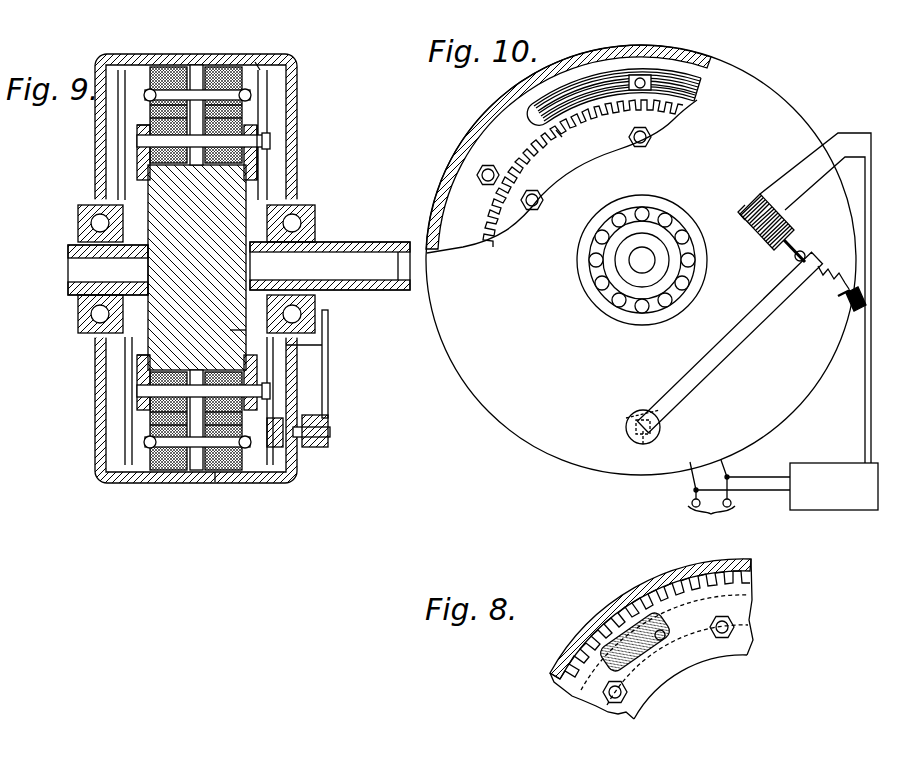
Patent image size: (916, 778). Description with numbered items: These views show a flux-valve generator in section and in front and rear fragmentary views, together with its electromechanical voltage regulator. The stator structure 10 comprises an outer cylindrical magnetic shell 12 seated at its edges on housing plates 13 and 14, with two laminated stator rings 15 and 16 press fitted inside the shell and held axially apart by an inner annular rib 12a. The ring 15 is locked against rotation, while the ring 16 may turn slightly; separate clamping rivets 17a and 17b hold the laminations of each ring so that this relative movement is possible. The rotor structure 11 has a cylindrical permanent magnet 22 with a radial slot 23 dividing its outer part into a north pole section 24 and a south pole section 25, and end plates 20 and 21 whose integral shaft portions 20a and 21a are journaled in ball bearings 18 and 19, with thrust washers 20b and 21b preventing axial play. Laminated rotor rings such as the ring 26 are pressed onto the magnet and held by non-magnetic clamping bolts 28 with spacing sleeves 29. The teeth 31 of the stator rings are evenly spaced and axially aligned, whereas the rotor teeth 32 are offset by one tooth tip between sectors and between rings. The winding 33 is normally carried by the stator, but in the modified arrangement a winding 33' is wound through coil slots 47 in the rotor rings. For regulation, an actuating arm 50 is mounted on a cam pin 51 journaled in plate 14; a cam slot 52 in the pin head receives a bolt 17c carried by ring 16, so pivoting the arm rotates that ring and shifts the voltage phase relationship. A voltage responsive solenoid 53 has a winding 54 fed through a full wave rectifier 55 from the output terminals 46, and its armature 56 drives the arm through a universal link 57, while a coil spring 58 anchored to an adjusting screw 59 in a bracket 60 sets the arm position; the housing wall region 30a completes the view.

In FIG. 9, the stator structure 10 is at (238, 484).
In FIG. 9, the rotor structure 11 is at (260, 150).
In FIG. 9, the outer cylindrical magnetic shell 12 is at (165, 66).
In FIG. 8, the outer cylindrical magnetic shell 12 is at (600, 613).
In FIG. 9, the inner annular rib 12a is at (215, 66).
In FIG. 9, the housing plate 13 is at (138, 127).
In FIG. 9, the housing plate 14 is at (290, 112).
In FIG. 9, the stator ring 15 is at (150, 68).
In FIG. 8, the stator ring 15 is at (752, 576).
In FIG. 9, the stator ring 16 is at (258, 64).
In FIG. 9, the clamping rivets 17a is at (145, 92).
In FIG. 9, the clamping rivets 17b is at (252, 72).
In FIG. 9, the bolt 17c is at (222, 472).
In FIG. 10, the bolt 17c is at (640, 447).
In FIG. 9, the ball bearing 18 is at (82, 208).
In FIG. 9, the ball bearing 19 is at (305, 196).
In FIG. 10, the ball bearing 19 is at (585, 263).
In FIG. 9, the end plate 20 is at (140, 160).
In FIG. 9, the shaft portion 20a is at (80, 297).
In FIG. 9, the thrust washer 20b is at (80, 236).
In FIG. 9, the end plate 21 is at (268, 170).
In FIG. 9, the shaft portion 21a is at (395, 290).
In FIG. 10, the shaft portion 21a is at (628, 268).
In FIG. 9, the thrust washer 21b is at (316, 207).
In FIG. 9, the permanent magnet 22 is at (235, 270).
In FIG. 9, the radially disposed slot 23 is at (165, 345).
In FIG. 9, the annular section 24 is at (138, 333).
In FIG. 9, the annular section 25 is at (286, 352).
In FIG. 9, the annular ring 26 is at (150, 400).
In FIG. 8, the annular ring 26 is at (742, 630).
In FIG. 9, the clamping bolts 28 is at (138, 141).
In FIG. 9, the spacing sleeves 29 is at (160, 490).
In FIG. 10, the housing wall 30a is at (545, 101).
In FIG. 9, the teeth 31 is at (246, 92).
In FIG. 10, the teeth 31 is at (530, 158).
In FIG. 8, the teeth 31 is at (684, 628).
In FIG. 9, the teeth 32 is at (246, 106).
In FIG. 10, the teeth 32 is at (560, 132).
In FIG. 8, the teeth 32 is at (687, 602).
In FIG. 10, the winding 33 is at (614, 72).
In FIG. 8, the winding 33' is at (634, 642).
In FIG. 10, the output terminals 46 is at (739, 495).
In FIG. 8, the coil slots 47 is at (663, 640).
In FIG. 9, the actuating arm 50 is at (330, 356).
In FIG. 10, the actuating arm 50 is at (733, 351).
In FIG. 9, the cam pin 51 is at (332, 432).
In FIG. 10, the cam pin 51 is at (640, 410).
In FIG. 9, the cam slot 52 is at (274, 470).
In FIG. 10, the cam slot 52 is at (662, 410).
In FIG. 10, the voltage responsive solenoid 53 is at (758, 196).
In FIG. 10, the winding 54 is at (754, 240).
In FIG. 10, the full wave rectifier 55 is at (845, 511).
In FIG. 10, the armature 56 is at (790, 248).
In FIG. 10, the universal link 57 is at (802, 246).
In FIG. 10, the coil spring 58 is at (820, 290).
In FIG. 10, the adjusting screw 59 is at (850, 310).
In FIG. 10, the bracket 60 is at (850, 290).